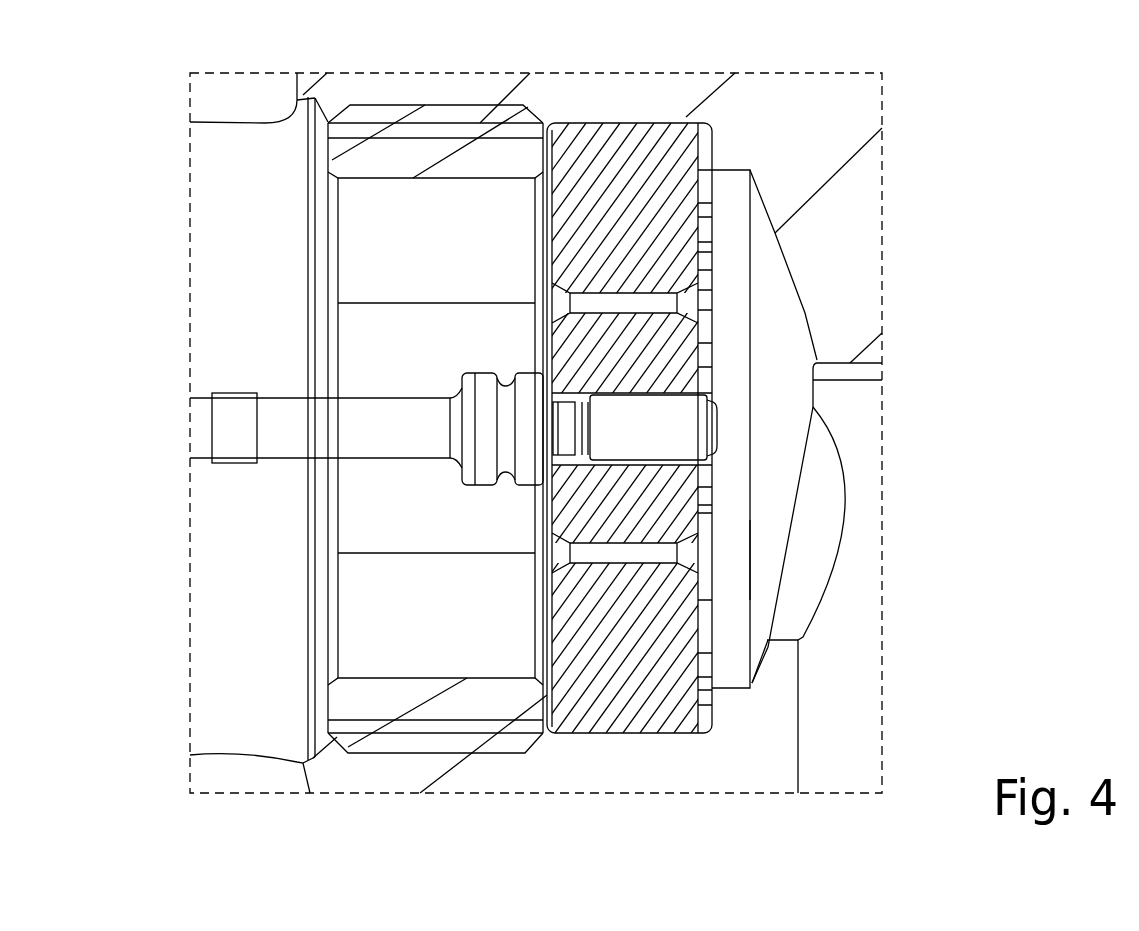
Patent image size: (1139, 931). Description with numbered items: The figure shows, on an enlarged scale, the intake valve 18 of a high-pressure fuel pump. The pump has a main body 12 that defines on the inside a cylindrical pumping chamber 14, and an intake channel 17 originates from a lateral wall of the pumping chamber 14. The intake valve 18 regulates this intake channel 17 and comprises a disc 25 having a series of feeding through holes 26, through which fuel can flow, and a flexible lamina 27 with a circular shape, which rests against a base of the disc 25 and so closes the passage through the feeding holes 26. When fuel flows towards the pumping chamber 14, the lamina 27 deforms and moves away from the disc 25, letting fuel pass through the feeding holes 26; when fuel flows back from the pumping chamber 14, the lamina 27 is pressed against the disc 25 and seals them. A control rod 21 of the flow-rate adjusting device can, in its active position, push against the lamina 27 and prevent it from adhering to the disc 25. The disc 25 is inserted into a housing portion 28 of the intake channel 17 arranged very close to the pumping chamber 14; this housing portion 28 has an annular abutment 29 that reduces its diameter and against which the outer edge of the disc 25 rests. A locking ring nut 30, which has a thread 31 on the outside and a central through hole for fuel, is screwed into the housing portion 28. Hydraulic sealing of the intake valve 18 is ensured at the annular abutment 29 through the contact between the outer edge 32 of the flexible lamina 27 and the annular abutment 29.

The main body 12 is at (797, 110).
The pumping chamber 14 is at (843, 678).
The intake channel 17 is at (783, 315).
The intake valve 18 is at (772, 500).
The control rod 21 is at (283, 428).
The disc 25 is at (625, 193).
The feeding through holes 26 is at (625, 556).
The flexible lamina 27 is at (729, 560).
The housing portion 28 is at (571, 99).
The annular abutment 29 is at (732, 157).
The locking ring nut 30 is at (402, 157).
The thread 31 is at (467, 117).
The outer edge 32 is at (703, 140).